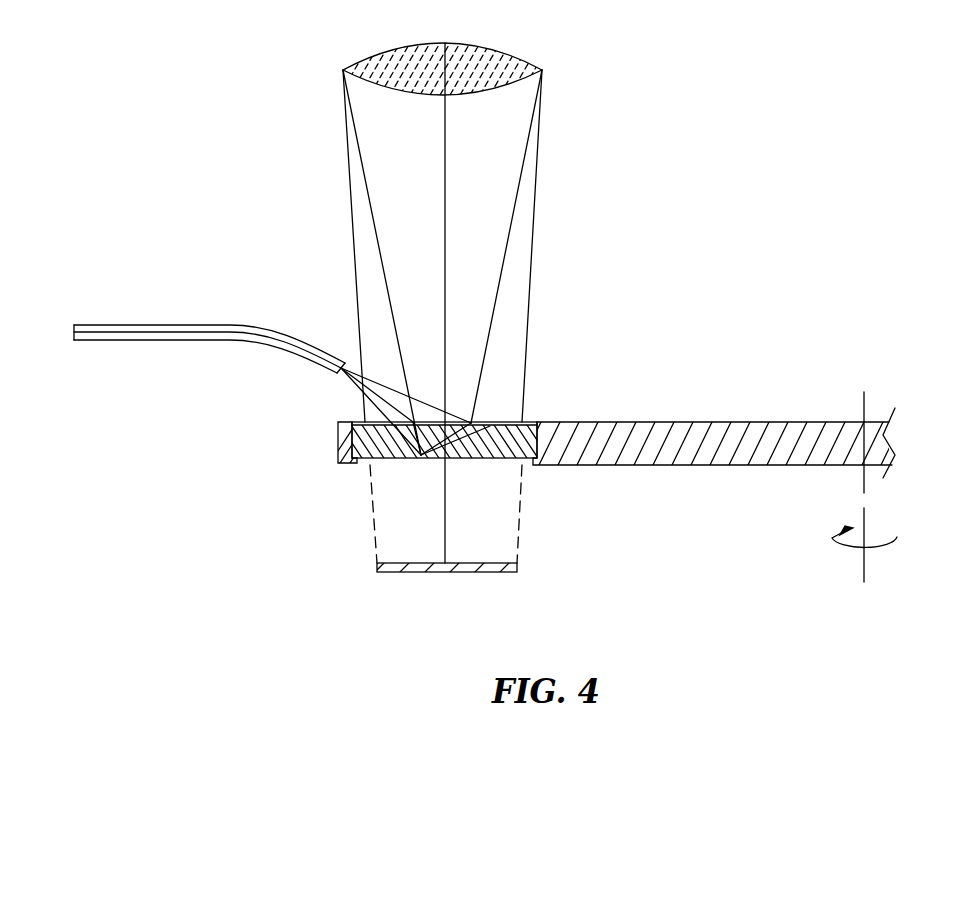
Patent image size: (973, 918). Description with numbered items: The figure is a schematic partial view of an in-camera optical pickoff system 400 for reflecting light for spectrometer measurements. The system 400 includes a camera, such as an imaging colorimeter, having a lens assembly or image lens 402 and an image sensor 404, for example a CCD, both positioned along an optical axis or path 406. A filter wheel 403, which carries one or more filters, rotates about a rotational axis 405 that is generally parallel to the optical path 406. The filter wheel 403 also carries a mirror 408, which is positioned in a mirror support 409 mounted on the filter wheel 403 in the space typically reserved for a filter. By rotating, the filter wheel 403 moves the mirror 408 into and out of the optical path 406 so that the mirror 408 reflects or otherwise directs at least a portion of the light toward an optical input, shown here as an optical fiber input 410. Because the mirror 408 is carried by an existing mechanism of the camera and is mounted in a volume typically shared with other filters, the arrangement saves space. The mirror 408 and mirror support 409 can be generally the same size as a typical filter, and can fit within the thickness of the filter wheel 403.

The in-camera optical pickoff system 400 is at (832, 146).
The image lens 402 is at (400, 99).
The filter wheel 403 is at (641, 415).
The image sensor 404 is at (480, 568).
The rotational axis 405 is at (855, 487).
The optical axis 406 is at (445, 168).
The mirror 408 is at (412, 463).
The mirror support 409 is at (514, 410).
The optical fiber input 410 is at (152, 340).